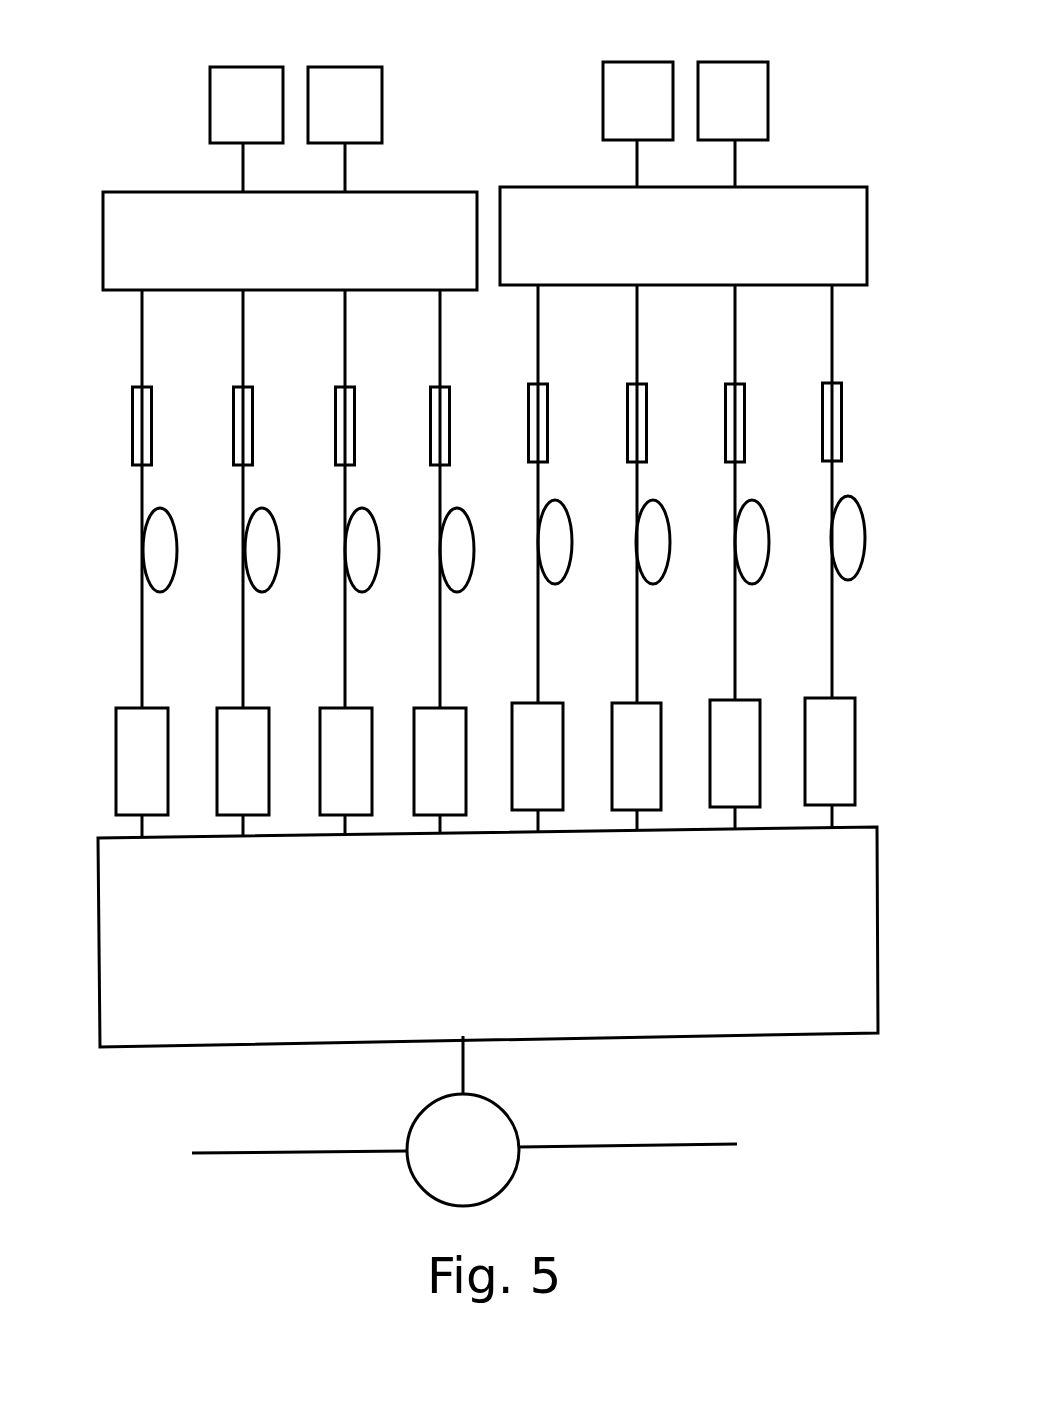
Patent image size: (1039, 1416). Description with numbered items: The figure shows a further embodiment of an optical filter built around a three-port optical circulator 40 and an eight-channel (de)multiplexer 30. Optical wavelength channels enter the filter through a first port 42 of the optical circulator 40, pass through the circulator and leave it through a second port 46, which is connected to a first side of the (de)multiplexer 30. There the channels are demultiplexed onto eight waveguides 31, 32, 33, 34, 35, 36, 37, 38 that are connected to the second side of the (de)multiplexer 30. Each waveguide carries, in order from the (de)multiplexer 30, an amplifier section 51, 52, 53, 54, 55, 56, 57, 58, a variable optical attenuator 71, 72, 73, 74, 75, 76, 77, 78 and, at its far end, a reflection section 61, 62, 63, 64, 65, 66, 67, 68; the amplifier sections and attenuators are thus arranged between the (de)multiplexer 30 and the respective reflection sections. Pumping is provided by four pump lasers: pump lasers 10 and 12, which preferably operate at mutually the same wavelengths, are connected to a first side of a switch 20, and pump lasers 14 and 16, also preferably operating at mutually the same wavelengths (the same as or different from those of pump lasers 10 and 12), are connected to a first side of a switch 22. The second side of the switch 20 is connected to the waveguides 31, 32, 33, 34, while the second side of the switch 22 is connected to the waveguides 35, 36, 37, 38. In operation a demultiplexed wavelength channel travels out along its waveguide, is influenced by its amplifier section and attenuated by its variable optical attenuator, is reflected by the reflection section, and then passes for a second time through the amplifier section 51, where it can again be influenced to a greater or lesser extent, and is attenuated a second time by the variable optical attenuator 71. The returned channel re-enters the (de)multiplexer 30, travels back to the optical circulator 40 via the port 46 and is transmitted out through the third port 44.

The pump laser 10 is at (220, 108).
The pump laser 12 is at (369, 90).
The pump laser 14 is at (614, 105).
The pump laser 16 is at (760, 82).
The switch 20 is at (425, 200).
The switch 22 is at (835, 195).
The eight-channel (de)multiplexer 30 is at (178, 1046).
The waveguide 31 is at (142, 655).
The waveguide 32 is at (243, 650).
The waveguide 33 is at (345, 645).
The waveguide 34 is at (440, 645).
The waveguide 35 is at (538, 648).
The waveguide 36 is at (637, 643).
The waveguide 37 is at (735, 638).
The waveguide 38 is at (832, 633).
The three-port optical circulator 40 is at (410, 1172).
The first port 42 is at (252, 1153).
The third port 44 is at (698, 1146).
The second port 46 is at (463, 1078).
The amplifier section 51 is at (170, 552).
The amplifier section 52 is at (270, 552).
The amplifier section 53 is at (372, 550).
The amplifier section 54 is at (467, 548).
The amplifier section 55 is at (566, 544).
The amplifier section 56 is at (662, 546).
The amplifier section 57 is at (758, 546).
The amplifier section 58 is at (862, 520).
The reflection section 61 is at (136, 428).
The reflection section 62 is at (236, 418).
The reflection section 63 is at (340, 414).
The reflection section 64 is at (436, 422).
The reflection section 65 is at (532, 422).
The reflection section 66 is at (632, 408).
The reflection section 67 is at (732, 408).
The reflection section 68 is at (830, 408).
The variable optical attenuator 71 is at (126, 768).
The variable optical attenuator 72 is at (230, 793).
The variable optical attenuator 73 is at (337, 793).
The variable optical attenuator 74 is at (435, 793).
The variable optical attenuator 75 is at (532, 776).
The variable optical attenuator 76 is at (638, 785).
The variable optical attenuator 77 is at (728, 783).
The variable optical attenuator 78 is at (826, 783).